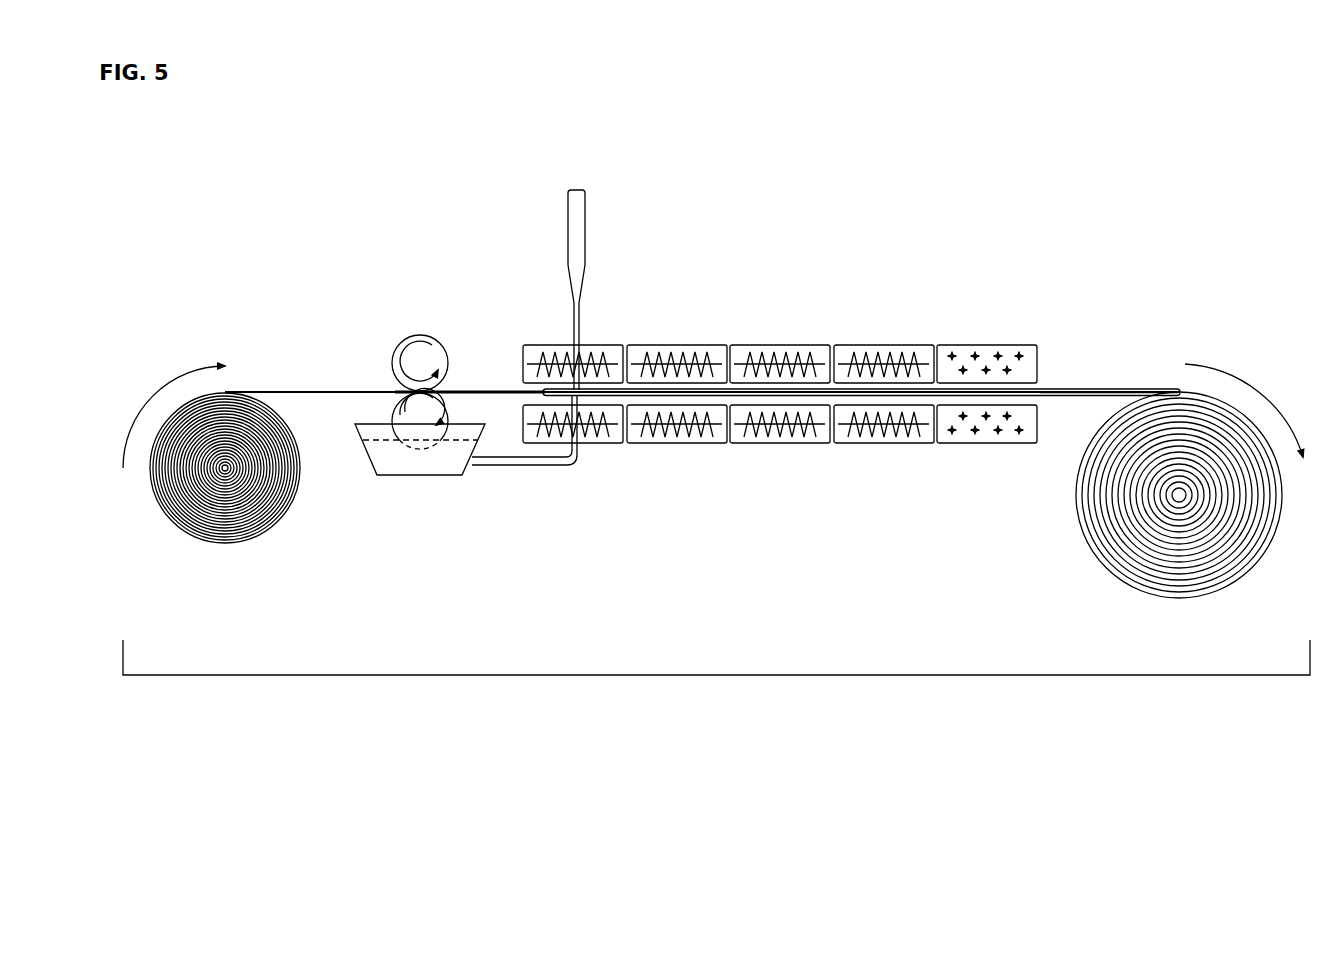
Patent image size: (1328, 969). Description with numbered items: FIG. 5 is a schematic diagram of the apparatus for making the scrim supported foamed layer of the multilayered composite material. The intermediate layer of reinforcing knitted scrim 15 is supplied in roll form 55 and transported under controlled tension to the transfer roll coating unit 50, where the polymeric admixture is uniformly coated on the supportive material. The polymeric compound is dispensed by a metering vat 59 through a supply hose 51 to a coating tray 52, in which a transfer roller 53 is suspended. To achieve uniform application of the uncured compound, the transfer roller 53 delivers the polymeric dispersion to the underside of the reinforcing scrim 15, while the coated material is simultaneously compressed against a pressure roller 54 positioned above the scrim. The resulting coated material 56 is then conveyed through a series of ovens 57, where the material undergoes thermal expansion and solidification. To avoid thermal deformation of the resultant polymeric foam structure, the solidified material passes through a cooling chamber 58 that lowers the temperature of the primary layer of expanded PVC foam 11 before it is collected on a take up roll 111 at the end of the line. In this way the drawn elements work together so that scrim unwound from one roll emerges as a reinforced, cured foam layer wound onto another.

The transfer roll coating unit 50 is at (718, 675).
The roll form 55 is at (193, 543).
The knitted scrim 15 is at (255, 391).
The pressure roller 54 is at (406, 338).
The transfer roller 53 is at (375, 416).
The coating tray 52 is at (396, 477).
The supply hose 51 is at (530, 467).
The metering vat 59 is at (568, 262).
The coated material 56 is at (487, 389).
The ovens 57 is at (602, 345).
The cooling chamber 58 is at (1017, 345).
The primary layer of expanded PVC foam 11 is at (1098, 389).
The take up roll 111 is at (1102, 553).